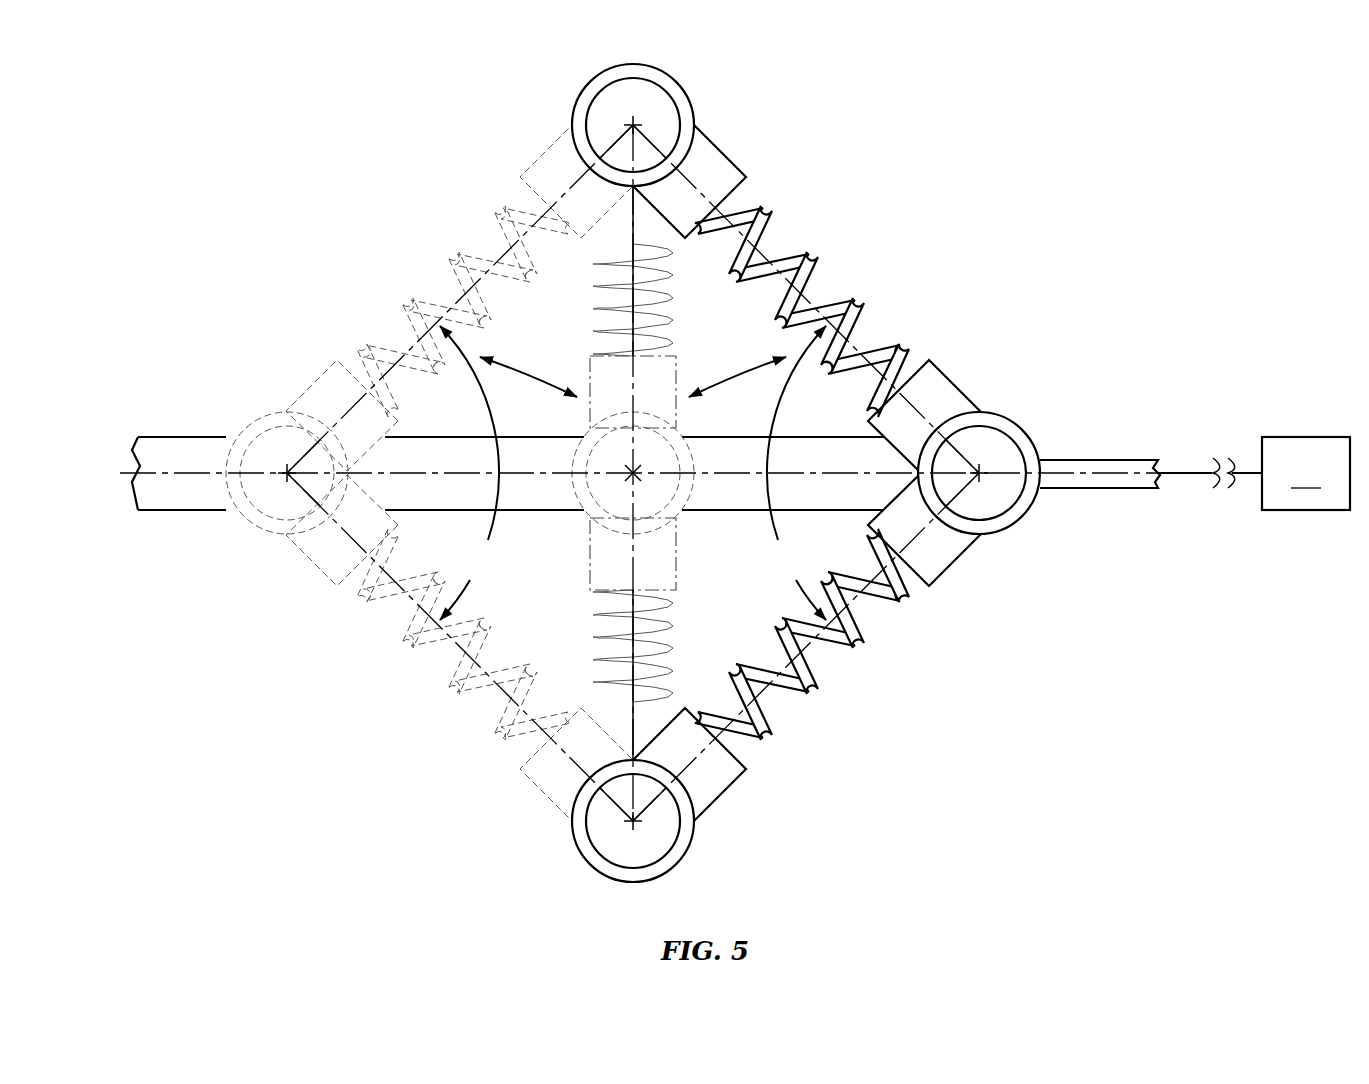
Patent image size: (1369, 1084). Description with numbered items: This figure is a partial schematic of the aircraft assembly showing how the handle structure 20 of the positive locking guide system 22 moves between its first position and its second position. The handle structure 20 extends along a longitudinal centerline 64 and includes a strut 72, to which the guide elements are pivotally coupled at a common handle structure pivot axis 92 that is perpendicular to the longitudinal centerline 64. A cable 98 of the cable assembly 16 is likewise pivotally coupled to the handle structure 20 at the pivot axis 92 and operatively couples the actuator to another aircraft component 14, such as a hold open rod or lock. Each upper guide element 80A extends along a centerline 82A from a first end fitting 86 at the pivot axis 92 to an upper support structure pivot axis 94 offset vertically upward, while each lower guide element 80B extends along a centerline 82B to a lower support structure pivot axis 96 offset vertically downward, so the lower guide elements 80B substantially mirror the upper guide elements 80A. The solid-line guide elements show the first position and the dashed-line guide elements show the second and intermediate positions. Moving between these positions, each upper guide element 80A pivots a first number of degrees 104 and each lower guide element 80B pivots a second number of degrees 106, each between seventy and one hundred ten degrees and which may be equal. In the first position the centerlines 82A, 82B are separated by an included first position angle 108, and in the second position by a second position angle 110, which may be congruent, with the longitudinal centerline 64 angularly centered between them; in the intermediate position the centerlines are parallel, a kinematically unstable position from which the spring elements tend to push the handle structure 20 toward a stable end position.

The aircraft component 14 is at (1306, 473).
The cable assembly 16 is at (1098, 456).
The handle structure 20 is at (120, 418).
The positive locking guide system 22 is at (781, 86).
The longitudinal centerline 64 is at (175, 470).
The strut 72 is at (178, 438).
The upper guide element 80A is at (437, 240).
The lower guide element 80B is at (578, 682).
The centerline of upper guide element 82A is at (548, 155).
The centerline of lower guide element 82B is at (547, 767).
The first end fitting 86 is at (312, 398).
The handle structure pivot axis 92 is at (287, 473).
The upper support structure pivot axis 94 is at (637, 123).
The lower support structure pivot axis 96 is at (630, 822).
The cable 98 is at (1095, 483).
The first number of degrees 104 is at (480, 273).
The second number of degrees 106 is at (483, 668).
The first position angle 108 is at (791, 473).
The second position angle 110 is at (472, 473).